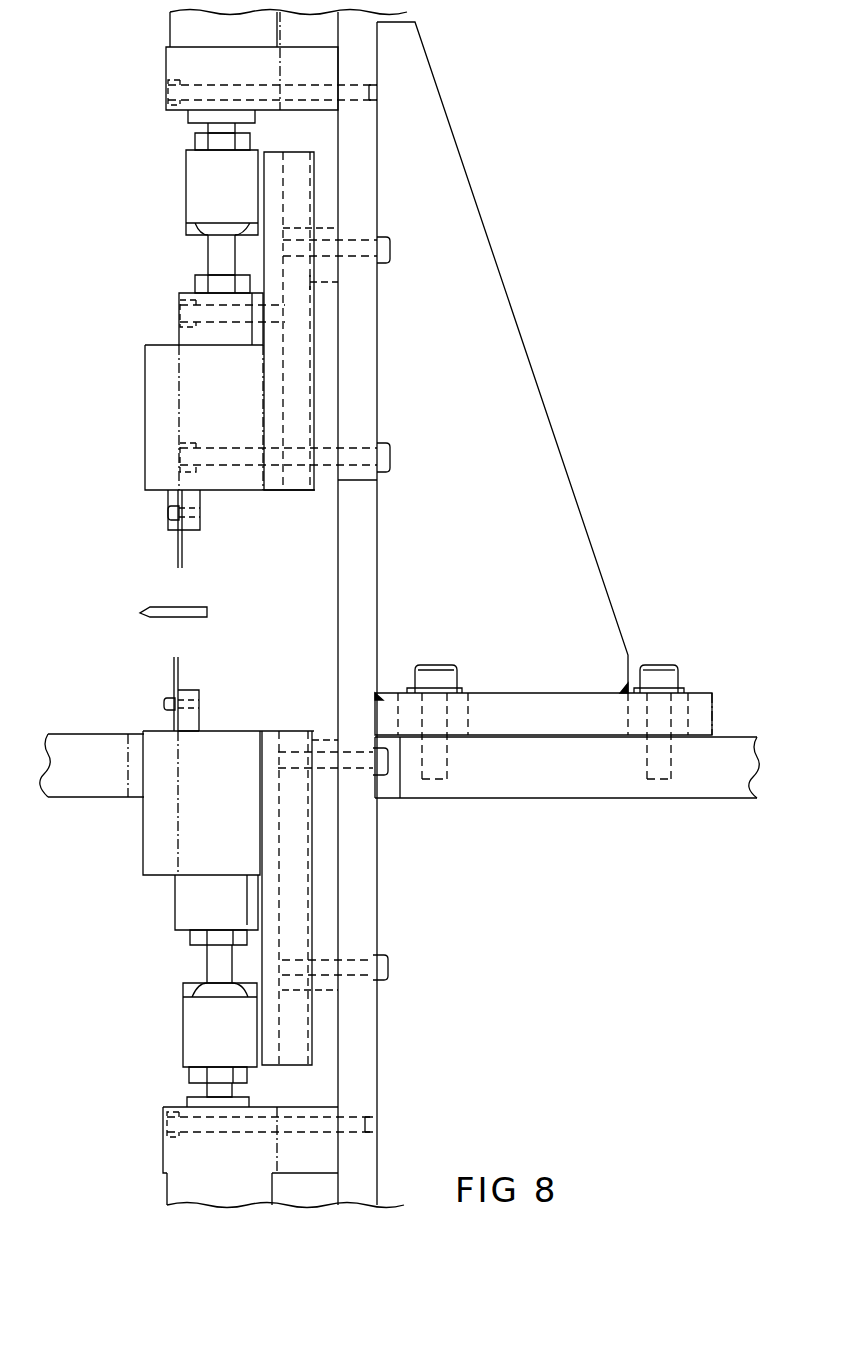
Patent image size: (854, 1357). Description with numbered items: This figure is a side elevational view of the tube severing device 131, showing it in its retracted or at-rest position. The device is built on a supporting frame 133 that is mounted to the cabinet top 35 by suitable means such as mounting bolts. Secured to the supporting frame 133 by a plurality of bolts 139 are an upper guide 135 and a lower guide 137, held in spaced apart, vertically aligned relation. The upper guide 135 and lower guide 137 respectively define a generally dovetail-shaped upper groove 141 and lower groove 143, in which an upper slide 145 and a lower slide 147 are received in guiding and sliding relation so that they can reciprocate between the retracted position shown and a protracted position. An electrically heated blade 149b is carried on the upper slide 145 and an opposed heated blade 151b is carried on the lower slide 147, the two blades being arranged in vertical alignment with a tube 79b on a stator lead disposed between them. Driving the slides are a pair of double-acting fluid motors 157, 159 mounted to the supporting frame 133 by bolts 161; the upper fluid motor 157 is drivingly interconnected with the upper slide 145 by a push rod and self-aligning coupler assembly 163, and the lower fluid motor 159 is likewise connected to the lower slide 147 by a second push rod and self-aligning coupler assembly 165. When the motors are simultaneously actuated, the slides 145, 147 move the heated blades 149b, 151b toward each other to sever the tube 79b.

The tube severing device 131 is at (95, 288).
The supporting frame 133 is at (378, 141).
The cabinet top 35 is at (95, 733).
The fluid motor 157 is at (175, 60).
The bolts 161 is at (168, 112).
The push rod and self-aligning coupler assembly 163 is at (186, 181).
The upper slide 145 is at (160, 409).
The upper guide 135 is at (300, 343).
The upper guide groove 141 is at (312, 282).
The bolts 139 is at (391, 250).
The heated blade 149b is at (178, 562).
The tube 79b is at (170, 606).
The heated blade 151b is at (172, 667).
The lower slide 147 is at (150, 845).
The lower guide 137 is at (300, 900).
The lower guide groove 143 is at (308, 858).
The push rod and self-aligning coupler assembly 165 is at (185, 1016).
The fluid motor 159 is at (166, 1158).